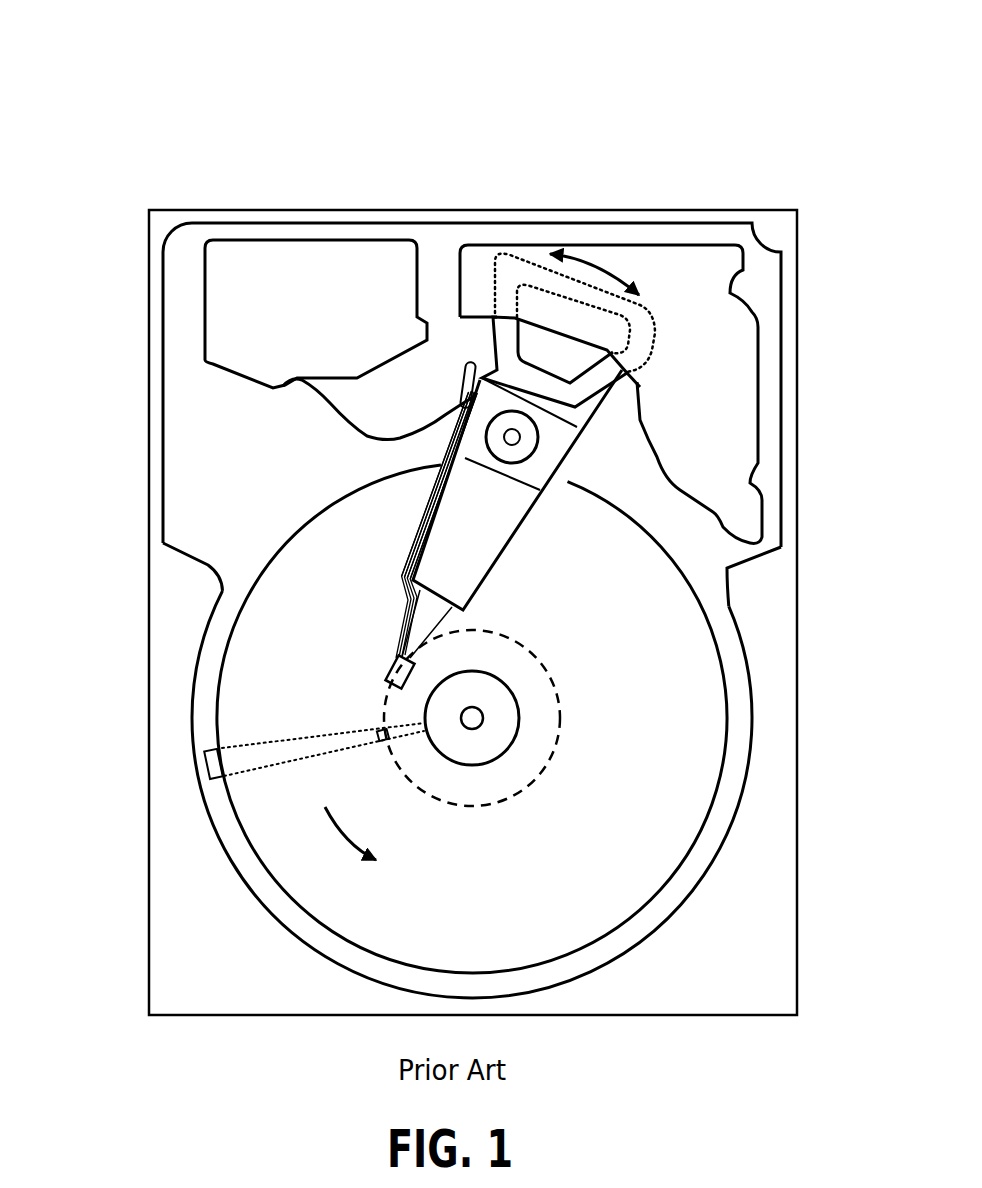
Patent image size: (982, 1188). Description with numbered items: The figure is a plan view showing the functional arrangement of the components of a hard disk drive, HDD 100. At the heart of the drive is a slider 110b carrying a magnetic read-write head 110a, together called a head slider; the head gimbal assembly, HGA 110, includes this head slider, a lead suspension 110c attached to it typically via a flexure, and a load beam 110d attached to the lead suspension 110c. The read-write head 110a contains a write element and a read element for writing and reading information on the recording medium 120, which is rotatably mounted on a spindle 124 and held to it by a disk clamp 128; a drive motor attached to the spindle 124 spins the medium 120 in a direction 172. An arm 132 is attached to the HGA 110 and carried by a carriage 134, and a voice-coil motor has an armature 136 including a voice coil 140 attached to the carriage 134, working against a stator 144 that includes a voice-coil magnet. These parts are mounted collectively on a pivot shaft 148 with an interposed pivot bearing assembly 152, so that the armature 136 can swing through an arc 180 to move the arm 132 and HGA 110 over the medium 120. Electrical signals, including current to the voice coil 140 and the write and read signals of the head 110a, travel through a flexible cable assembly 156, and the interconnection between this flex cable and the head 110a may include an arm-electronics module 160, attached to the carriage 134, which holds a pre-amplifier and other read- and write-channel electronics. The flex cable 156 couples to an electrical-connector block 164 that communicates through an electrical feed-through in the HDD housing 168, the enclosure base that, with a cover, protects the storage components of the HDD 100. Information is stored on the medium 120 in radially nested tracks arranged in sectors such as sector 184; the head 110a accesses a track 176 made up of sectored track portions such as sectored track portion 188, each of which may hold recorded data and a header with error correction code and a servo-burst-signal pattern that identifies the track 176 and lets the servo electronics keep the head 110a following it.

The hard disk drive 100 is at (76, 87).
The head gimbal assembly 110 is at (78, 522).
The magnetic read-write head 110a is at (383, 690).
The slider 110b is at (397, 653).
The lead suspension 110c is at (407, 622).
The load beam 110d is at (417, 607).
The recording medium 120 is at (652, 672).
The spindle 124 is at (473, 713).
The disk clamp 128 is at (498, 735).
The arm 132 is at (465, 553).
The carriage 134 is at (533, 470).
The armature 136 is at (510, 325).
The voice coil 140 is at (490, 347).
The stator 144 is at (725, 338).
The pivot shaft 148 is at (513, 437).
The pivot bearing assembly 152 is at (527, 445).
The flexible cable assembly 156 is at (330, 407).
The arm-electronics module 160 is at (468, 400).
The electrical-connector block 164 is at (230, 312).
The HDD housing 168 is at (777, 222).
The direction 172 is at (357, 842).
The track 176 is at (547, 677).
The arc 180 is at (595, 273).
The sector 184 is at (197, 767).
The sectored track portion 188 is at (375, 733).